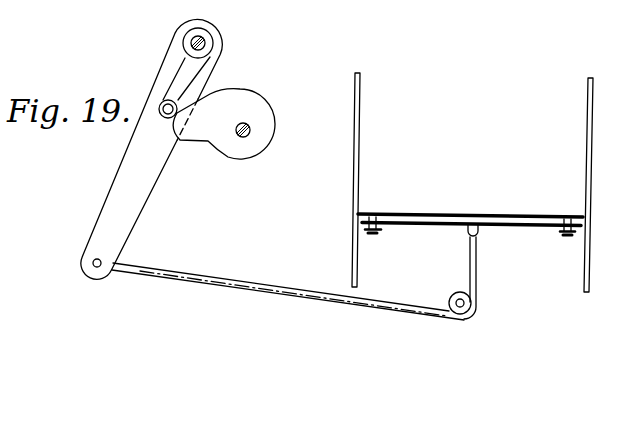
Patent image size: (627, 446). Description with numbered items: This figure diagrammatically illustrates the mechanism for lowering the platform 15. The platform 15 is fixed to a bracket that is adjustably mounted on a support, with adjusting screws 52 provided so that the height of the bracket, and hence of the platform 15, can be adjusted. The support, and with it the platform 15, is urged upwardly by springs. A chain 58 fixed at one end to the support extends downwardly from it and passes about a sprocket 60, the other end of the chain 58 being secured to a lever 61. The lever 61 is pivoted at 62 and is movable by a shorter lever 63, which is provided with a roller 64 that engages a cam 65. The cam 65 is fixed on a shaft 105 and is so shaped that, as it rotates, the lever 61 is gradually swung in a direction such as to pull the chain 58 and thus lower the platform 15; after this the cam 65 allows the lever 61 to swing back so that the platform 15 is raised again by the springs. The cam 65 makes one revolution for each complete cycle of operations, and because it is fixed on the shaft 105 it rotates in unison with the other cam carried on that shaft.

The platform 15 is at (492, 213).
The adjusting screws 52 is at (372, 235).
The chain 58 is at (477, 259).
The sprocket 60 is at (448, 294).
The lever 61 is at (123, 178).
The pivot 62 is at (200, 40).
The shorter lever 63 is at (186, 53).
The roller 64 is at (163, 102).
The cam 65 is at (273, 118).
The shaft 105 is at (245, 124).